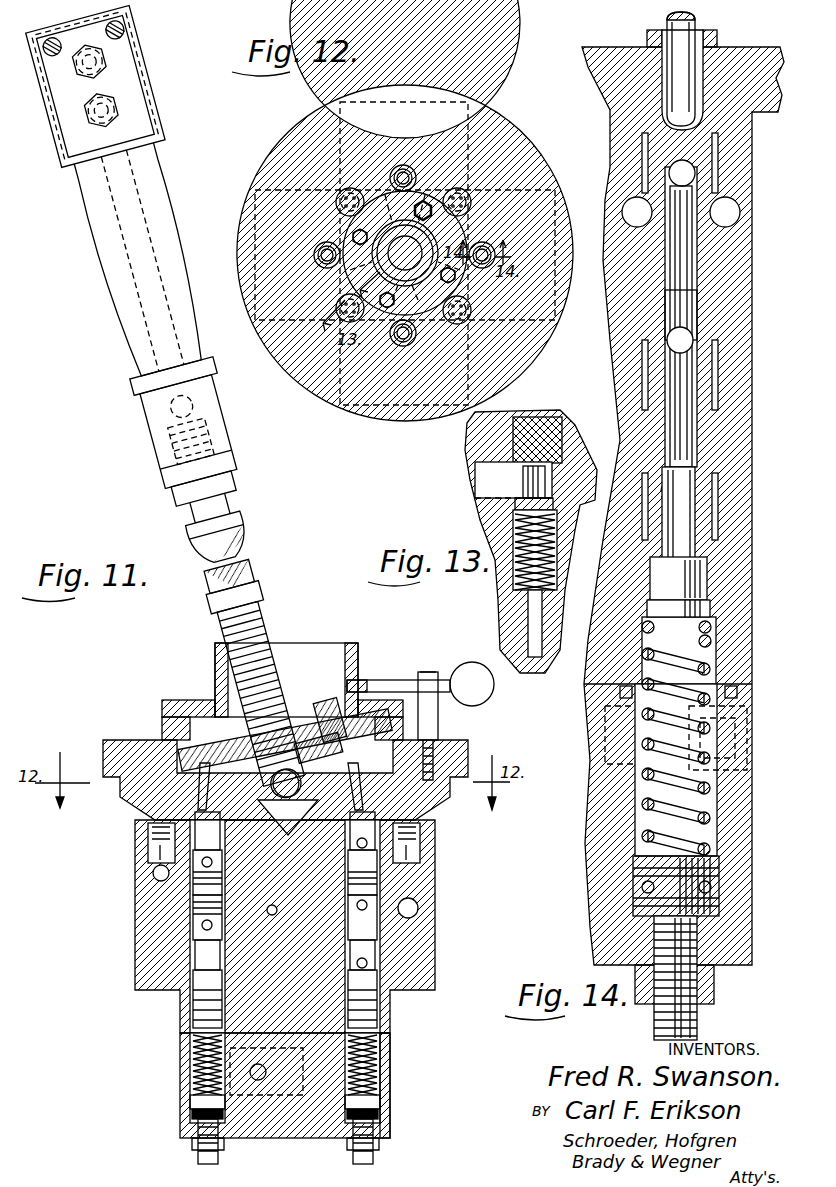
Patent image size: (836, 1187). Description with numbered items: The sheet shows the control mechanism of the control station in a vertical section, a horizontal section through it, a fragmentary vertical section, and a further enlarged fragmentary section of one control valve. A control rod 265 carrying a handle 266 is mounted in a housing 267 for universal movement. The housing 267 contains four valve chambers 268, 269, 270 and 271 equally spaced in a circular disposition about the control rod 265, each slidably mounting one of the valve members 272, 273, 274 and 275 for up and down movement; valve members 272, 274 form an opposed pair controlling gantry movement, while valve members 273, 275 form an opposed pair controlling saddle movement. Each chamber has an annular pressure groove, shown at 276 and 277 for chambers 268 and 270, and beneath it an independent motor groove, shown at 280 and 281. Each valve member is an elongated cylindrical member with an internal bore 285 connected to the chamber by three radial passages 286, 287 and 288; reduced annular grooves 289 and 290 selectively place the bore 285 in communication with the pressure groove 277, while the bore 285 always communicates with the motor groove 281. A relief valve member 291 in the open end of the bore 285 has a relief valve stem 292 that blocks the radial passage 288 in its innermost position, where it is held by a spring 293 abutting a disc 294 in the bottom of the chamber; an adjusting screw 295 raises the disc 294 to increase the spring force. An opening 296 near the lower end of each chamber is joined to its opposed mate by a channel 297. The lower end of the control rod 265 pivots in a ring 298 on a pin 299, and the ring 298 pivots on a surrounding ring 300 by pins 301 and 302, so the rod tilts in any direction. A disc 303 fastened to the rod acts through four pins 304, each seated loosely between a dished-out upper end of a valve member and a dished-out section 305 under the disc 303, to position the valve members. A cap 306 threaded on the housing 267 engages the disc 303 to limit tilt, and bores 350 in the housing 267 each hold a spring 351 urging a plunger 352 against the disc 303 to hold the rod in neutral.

In FIG. 11, the control rod 265 is at (258, 624).
In FIG. 11, the handle 266 is at (128, 325).
In FIG. 11, the housing 267 is at (285, 1125).
In FIG. 12, the housing 267 is at (497, 127).
In FIG. 11, the valve chamber 268 is at (195, 992).
In FIG. 12, the valve chamber 268 is at (322, 281).
In FIG. 12, the valve chamber 269 is at (411, 172).
In FIG. 11, the valve chamber 270 is at (380, 1000).
In FIG. 12, the valve chamber 270 is at (484, 245).
In FIG. 14, the valve chamber 270 is at (710, 562).
In FIG. 12, the valve chamber 271 is at (425, 337).
In FIG. 11, the valve member 272 is at (193, 882).
In FIG. 12, the valve member 272 is at (325, 244).
In FIG. 12, the valve member 273 is at (392, 177).
In FIG. 11, the valve member 274 is at (385, 940).
In FIG. 12, the valve member 274 is at (470, 287).
In FIG. 14, the valve member 274 is at (703, 287).
In FIG. 12, the valve member 275 is at (402, 343).
In FIG. 11, the annular pressure groove 276 is at (226, 855).
In FIG. 11, the annular pressure groove 277 is at (345, 855).
In FIG. 14, the annular pressure groove 277 is at (732, 218).
In FIG. 11, the motor groove 280 is at (276, 912).
In FIG. 11, the motor groove 281 is at (340, 918).
In FIG. 14, the motor groove 281 is at (630, 355).
In FIG. 14, the internal bore 285 is at (683, 260).
In FIG. 14, the radial passage 286 is at (695, 185).
In FIG. 14, the radial passage 287 is at (693, 342).
In FIG. 14, the radial passage 288 is at (690, 492).
In FIG. 14, the reduced annular groove 289 is at (717, 163).
In FIG. 14, the reduced annular groove 290 is at (713, 395).
In FIG. 14, the relief valve member 291 is at (693, 588).
In FIG. 14, the relief valve stem 292 is at (680, 533).
In FIG. 11, the spring 293 is at (195, 1066).
In FIG. 14, the spring 293 is at (645, 800).
In FIG. 14, the disc 294 is at (640, 872).
In FIG. 14, the adjusting screw 295 is at (700, 1025).
In FIG. 11, the opening 296 is at (392, 1079).
In FIG. 14, the opening 296 is at (620, 760).
In FIG. 11, the channel 297 is at (272, 1077).
In FIG. 14, the channel 297 is at (628, 720).
In FIG. 11, the ring 298 is at (303, 805).
In FIG. 12, the ring 298 is at (430, 212).
In FIG. 11, the pin 299 is at (268, 815).
In FIG. 12, the pin 299 is at (336, 221).
In FIG. 11, the ring 300 is at (289, 745).
In FIG. 12, the ring 300 is at (438, 300).
In FIG. 12, the pin 301 is at (349, 297).
In FIG. 11, the pin 302 is at (308, 764).
In FIG. 12, the pin 302 is at (440, 222).
In FIG. 11, the disc 303 is at (330, 720).
In FIG. 13, the disc 303 is at (533, 423).
In FIG. 14, the disc 303 is at (680, 53).
In FIG. 11, the pin 304 is at (405, 812).
In FIG. 14, the pin 304 is at (647, 140).
In FIG. 11, the dished-out section 305 is at (400, 722).
In FIG. 11, the cap 306 is at (360, 652).
In FIG. 13, the cap 306 is at (475, 437).
In FIG. 12, the bore 350 is at (363, 180).
In FIG. 13, the bore 350 is at (525, 502).
In FIG. 13, the spring 351 is at (517, 570).
In FIG. 13, the plunger 352 is at (530, 478).